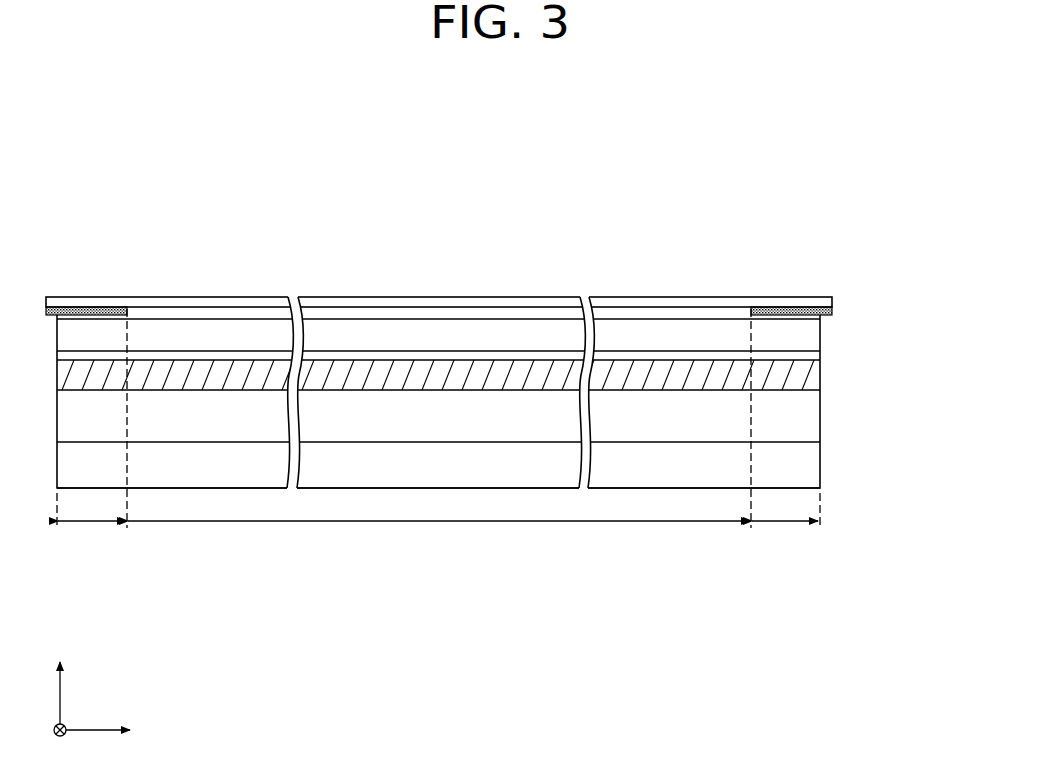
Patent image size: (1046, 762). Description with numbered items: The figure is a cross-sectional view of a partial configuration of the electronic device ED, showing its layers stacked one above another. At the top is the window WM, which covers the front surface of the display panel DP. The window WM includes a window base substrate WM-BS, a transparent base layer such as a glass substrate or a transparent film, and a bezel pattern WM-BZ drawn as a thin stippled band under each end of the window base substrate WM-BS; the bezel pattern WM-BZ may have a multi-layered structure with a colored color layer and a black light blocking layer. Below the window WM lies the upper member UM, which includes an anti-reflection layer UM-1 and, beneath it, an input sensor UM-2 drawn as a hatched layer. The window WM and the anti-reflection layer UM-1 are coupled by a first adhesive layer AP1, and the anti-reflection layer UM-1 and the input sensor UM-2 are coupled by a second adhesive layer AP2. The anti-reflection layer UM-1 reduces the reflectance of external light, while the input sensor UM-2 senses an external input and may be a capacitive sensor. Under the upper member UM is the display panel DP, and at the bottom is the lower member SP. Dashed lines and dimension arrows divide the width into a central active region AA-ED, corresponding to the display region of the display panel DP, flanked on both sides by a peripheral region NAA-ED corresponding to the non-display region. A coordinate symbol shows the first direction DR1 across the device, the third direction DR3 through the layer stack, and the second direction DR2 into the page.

The electronic device ED is at (130, 215).
The window WM is at (843, 223).
The window base substrate WM-BS is at (713, 302).
The bezel pattern WM-BZ is at (795, 307).
The first adhesive layer AP1 is at (615, 315).
The second adhesive layer AP2 is at (510, 355).
The upper member UM is at (918, 323).
The anti-reflection layer UM-1 is at (808, 335).
The input sensor UM-2 is at (808, 372).
The display panel DP is at (808, 425).
The lower member SP is at (808, 463).
The peripheral region NAA-ED is at (438, 538).
The active region AA-ED is at (439, 537).
The first direction DR1 is at (115, 730).
The second direction DR2 is at (59, 743).
The third direction DR3 is at (59, 680).